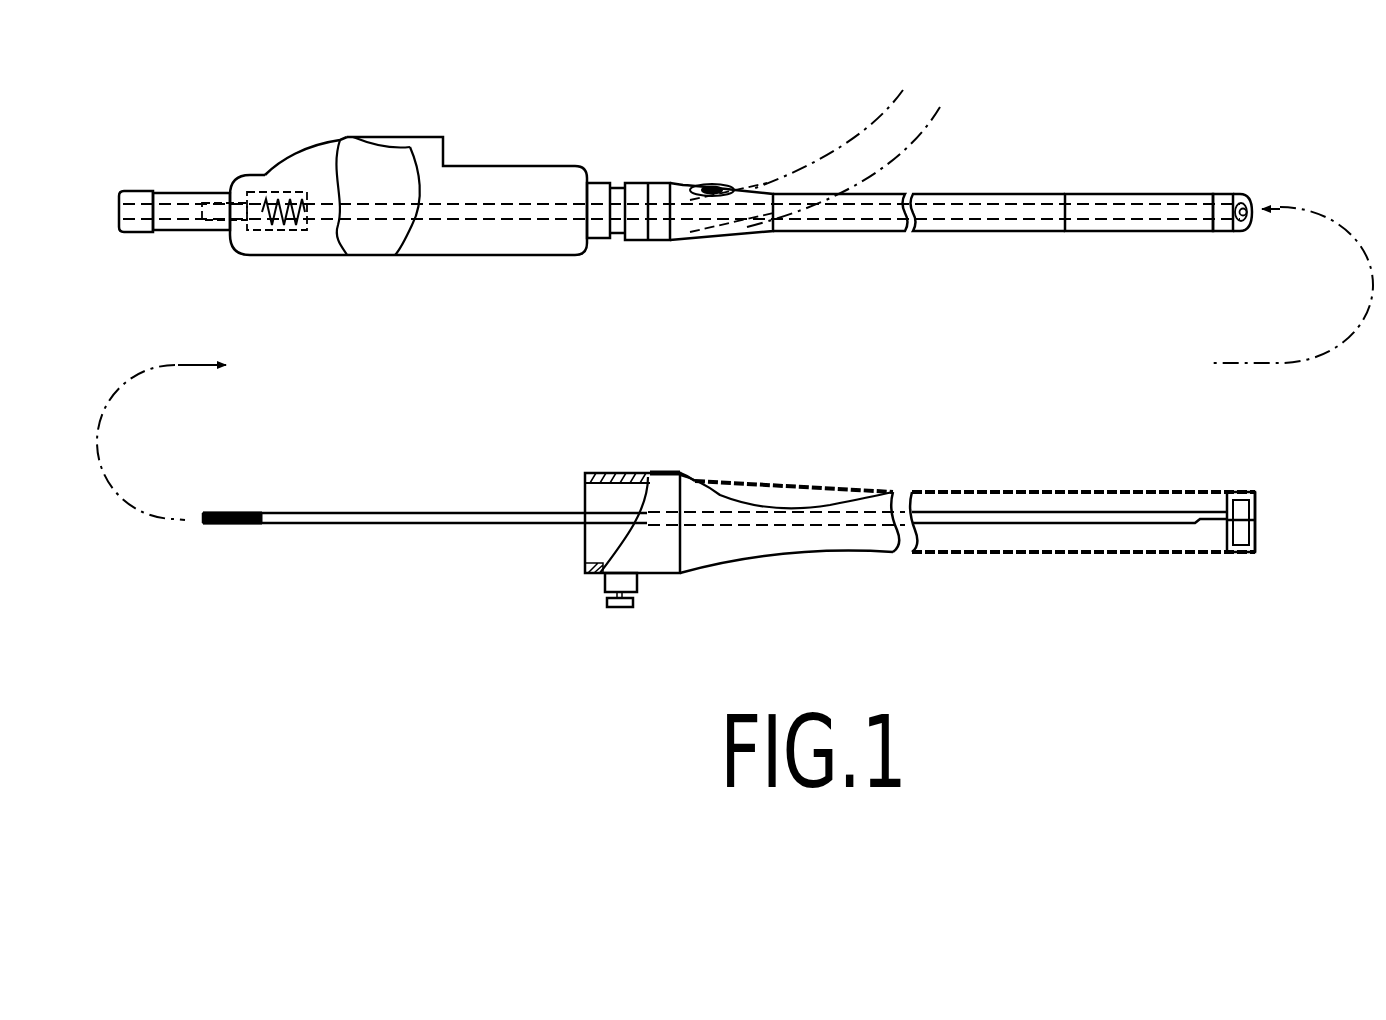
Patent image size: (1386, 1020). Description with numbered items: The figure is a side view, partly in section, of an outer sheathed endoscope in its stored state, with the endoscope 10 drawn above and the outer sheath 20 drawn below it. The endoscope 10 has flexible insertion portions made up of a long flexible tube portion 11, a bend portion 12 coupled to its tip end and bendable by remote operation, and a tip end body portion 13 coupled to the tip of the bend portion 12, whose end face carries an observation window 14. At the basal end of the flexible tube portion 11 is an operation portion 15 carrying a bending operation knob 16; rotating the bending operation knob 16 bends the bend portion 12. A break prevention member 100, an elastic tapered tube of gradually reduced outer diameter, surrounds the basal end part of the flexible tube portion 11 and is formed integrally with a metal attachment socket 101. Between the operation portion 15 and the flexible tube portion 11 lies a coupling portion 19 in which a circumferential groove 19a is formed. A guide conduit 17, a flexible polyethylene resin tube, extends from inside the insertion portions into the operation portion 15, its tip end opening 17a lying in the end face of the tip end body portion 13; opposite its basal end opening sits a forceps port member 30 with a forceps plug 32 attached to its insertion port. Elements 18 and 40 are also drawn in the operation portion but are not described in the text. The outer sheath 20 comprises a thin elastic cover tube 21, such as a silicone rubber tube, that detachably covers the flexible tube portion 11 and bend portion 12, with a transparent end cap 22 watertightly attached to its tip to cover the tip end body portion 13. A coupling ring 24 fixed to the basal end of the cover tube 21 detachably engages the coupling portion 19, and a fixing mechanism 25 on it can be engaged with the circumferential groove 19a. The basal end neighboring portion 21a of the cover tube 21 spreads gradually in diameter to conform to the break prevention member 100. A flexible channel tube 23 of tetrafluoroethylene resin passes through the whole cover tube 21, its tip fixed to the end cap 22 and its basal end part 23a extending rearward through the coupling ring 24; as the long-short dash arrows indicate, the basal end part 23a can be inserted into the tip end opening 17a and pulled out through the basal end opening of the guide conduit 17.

The endoscope 10 is at (507, 270).
The flexible tube portion 11 is at (812, 233).
The bend portion 12 is at (1133, 232).
The tip end body portion 13 is at (1227, 234).
The observation window 14 is at (1247, 234).
The operation portion 15 is at (508, 162).
The bending operation knob 16 is at (347, 242).
The guide conduit 17 is at (975, 218).
The tip end opening 17a is at (1245, 191).
The spring 18 is at (287, 232).
The coupling portion 19 is at (634, 182).
The circumferential groove 19a is at (617, 242).
The break prevention member 100 is at (703, 186).
The attachment socket 101 is at (658, 240).
The forceps port member 30 is at (173, 239).
The forceps plug 32 is at (133, 233).
The locking mechanism 40 is at (268, 206).
The outer sheath 20 is at (848, 564).
The cover tube 21 is at (993, 492).
The basal end neighboring portion 21a is at (771, 488).
The end cap 22 is at (1242, 492).
The flexible channel tube 23 is at (1113, 510).
The basal end part 23a is at (225, 513).
The coupling ring 24 is at (600, 474).
The fixing mechanism 25 is at (595, 598).